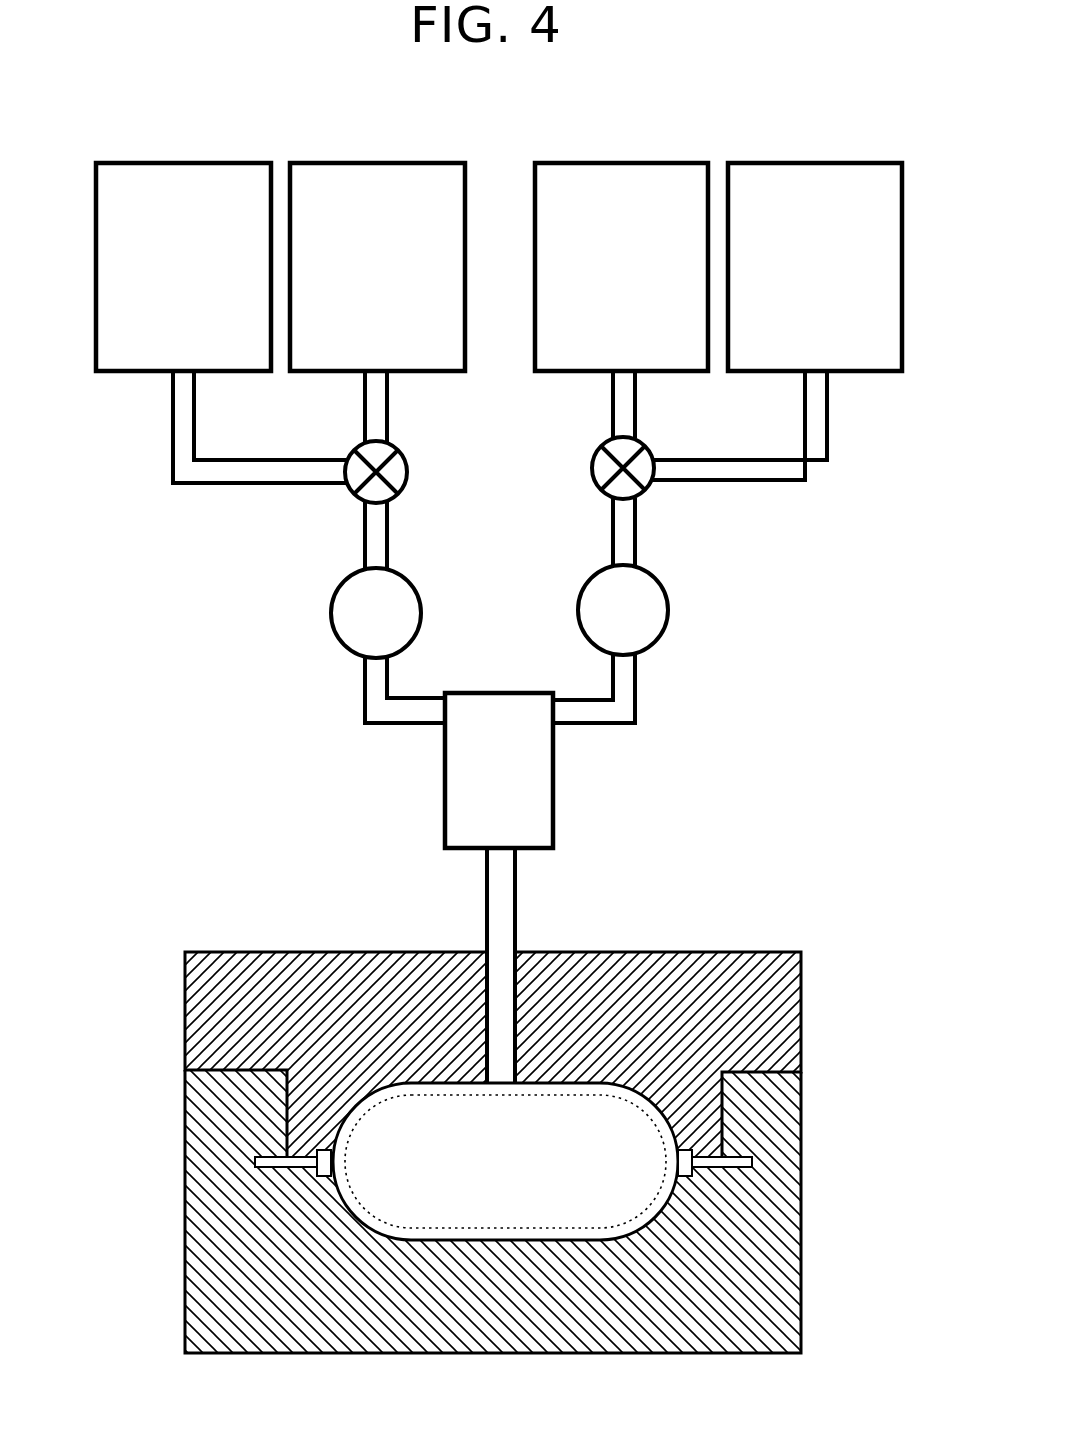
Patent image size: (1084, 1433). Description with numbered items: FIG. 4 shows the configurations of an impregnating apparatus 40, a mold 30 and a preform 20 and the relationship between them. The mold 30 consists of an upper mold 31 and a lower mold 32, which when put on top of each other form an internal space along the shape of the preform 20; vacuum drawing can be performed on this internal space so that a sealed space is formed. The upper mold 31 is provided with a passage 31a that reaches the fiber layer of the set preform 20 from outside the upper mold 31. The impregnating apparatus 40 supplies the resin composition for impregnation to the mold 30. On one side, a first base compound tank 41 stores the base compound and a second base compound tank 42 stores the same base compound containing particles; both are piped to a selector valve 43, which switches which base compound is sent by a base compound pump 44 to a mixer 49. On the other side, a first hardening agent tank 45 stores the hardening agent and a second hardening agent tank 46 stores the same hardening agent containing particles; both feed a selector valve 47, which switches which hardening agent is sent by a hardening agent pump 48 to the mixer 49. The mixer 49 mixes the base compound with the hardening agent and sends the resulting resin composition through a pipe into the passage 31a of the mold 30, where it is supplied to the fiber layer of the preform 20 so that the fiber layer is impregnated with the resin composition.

The impregnating apparatus 40 is at (146, 101).
The first base compound tank 41 is at (180, 176).
The second base compound tank 42 is at (366, 176).
The selector valve 43 is at (404, 456).
The base compound pump 44 is at (336, 616).
The first hardening agent tank 45 is at (622, 176).
The second hardening agent tank 46 is at (810, 176).
The selector valve 47 is at (648, 452).
The hardening agent pump 48 is at (655, 597).
The mixer 49 is at (502, 710).
The mold 30 is at (817, 929).
The upper mold 31 is at (803, 1022).
The passage 31a is at (503, 1012).
The lower mold 32 is at (803, 1172).
The preform 20 is at (418, 1102).